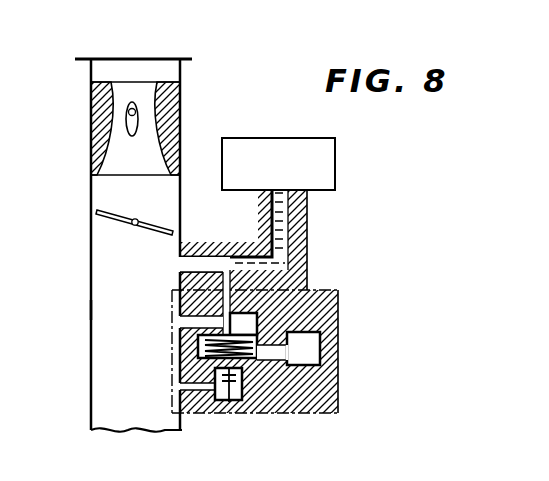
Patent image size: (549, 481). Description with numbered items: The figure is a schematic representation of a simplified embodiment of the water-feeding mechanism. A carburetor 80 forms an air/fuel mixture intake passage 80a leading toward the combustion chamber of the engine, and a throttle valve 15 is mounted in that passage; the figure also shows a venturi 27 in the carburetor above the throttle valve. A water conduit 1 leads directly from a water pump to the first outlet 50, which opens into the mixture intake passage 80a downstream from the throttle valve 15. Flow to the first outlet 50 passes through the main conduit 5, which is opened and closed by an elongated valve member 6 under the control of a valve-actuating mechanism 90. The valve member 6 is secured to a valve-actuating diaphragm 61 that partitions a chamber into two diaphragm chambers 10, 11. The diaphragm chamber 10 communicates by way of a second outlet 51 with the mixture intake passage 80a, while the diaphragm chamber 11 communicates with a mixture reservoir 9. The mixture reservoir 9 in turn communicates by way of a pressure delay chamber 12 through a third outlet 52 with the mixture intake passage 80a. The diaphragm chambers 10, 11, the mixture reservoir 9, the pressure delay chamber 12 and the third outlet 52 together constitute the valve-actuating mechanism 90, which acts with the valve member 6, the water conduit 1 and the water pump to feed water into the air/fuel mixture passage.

The water conduit 1 is at (285, 217).
The main conduit 5 is at (200, 262).
The valve member 6 is at (227, 262).
The mixture reservoir 9 is at (308, 349).
The diaphragm chamber 10 is at (214, 316).
The diaphragm chamber 11 is at (186, 357).
The pressure delay chamber 12 is at (231, 402).
The throttle valve 15 is at (112, 208).
The venturi 27 is at (174, 119).
The first outlet 50 is at (190, 268).
The second outlet 51 is at (181, 323).
The third outlet 52 is at (182, 387).
The valve-actuating diaphragm 61 is at (196, 352).
The carburetor 80 is at (90, 248).
The air/fuel mixture intake passage 80a is at (100, 316).
The valve-actuating mechanism 90 is at (338, 295).